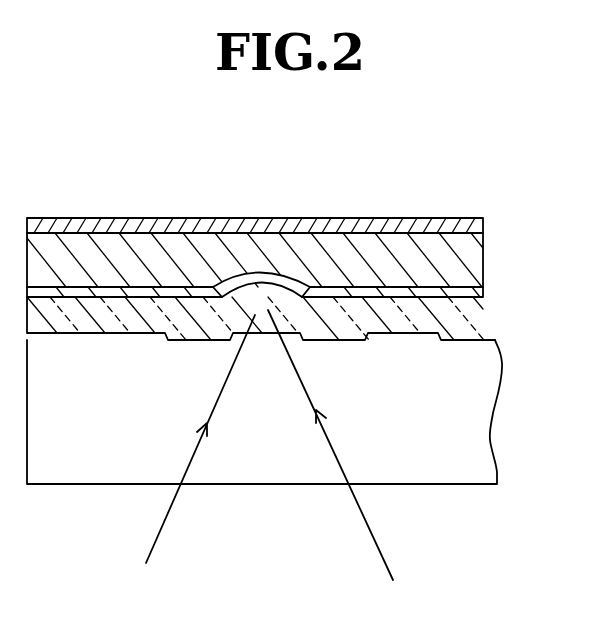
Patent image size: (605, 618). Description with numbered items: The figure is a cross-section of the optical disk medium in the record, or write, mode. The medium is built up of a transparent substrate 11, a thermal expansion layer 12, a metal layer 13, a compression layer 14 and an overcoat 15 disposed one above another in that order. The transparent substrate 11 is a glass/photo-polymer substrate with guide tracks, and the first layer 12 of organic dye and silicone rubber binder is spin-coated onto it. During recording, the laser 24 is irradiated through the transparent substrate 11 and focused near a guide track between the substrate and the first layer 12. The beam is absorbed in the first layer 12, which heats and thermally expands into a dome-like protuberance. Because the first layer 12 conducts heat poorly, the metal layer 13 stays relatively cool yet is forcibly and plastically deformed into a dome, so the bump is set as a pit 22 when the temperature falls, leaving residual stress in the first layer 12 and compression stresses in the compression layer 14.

The transparent substrate 11 is at (463, 417).
The thermal expansion layer 12 is at (280, 300).
The metal layer 13 is at (483, 285).
The compression layer 14 is at (422, 247).
The overcoat 15 is at (482, 218).
The pit 22 is at (262, 272).
The laser 24 is at (385, 555).